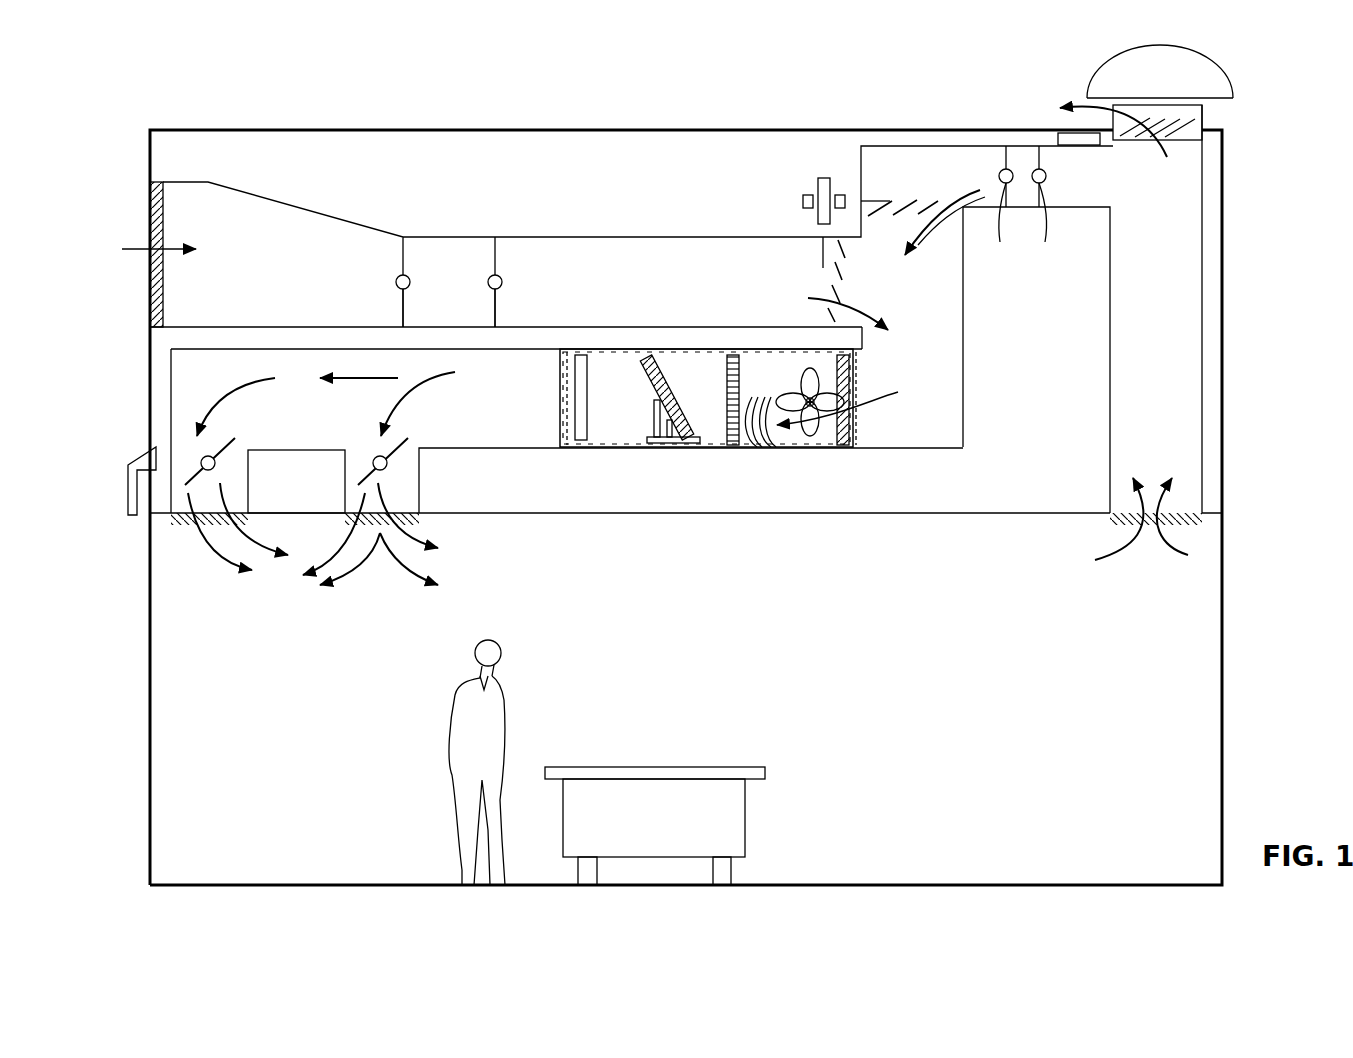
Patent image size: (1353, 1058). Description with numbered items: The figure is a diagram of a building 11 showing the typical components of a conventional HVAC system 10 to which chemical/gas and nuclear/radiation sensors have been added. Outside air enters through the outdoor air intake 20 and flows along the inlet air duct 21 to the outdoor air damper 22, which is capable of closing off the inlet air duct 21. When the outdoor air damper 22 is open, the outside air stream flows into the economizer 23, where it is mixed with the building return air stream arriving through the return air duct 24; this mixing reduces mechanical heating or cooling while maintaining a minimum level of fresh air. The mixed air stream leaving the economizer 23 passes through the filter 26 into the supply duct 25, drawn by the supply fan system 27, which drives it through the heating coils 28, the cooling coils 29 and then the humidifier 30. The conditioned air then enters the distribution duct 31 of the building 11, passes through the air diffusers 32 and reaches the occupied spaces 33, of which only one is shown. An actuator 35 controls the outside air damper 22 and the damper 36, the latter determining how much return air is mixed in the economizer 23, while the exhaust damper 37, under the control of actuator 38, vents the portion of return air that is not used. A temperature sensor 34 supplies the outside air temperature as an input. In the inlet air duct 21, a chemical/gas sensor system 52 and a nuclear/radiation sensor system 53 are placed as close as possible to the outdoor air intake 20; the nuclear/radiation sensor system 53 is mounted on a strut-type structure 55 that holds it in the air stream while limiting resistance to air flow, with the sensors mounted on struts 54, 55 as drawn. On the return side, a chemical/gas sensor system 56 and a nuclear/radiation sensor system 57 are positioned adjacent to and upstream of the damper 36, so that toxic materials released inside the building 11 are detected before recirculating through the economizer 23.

The HVAC system 10 is at (970, 588).
The building 11 is at (135, 684).
The outdoor air intake 20 is at (150, 222).
The inlet air duct 21 is at (283, 285).
The outdoor air damper 22 is at (833, 285).
The economizer 23 is at (963, 300).
The return air duct 24 is at (1176, 352).
The supply duct 25 is at (780, 352).
The filter 26 is at (850, 436).
The supply fan system 27 is at (830, 392).
The heating coils 28 is at (725, 408).
The cooling coils 29 is at (648, 376).
The humidifier 30 is at (573, 397).
The distribution duct 31 is at (494, 430).
The air diffusers 32 is at (222, 440).
The occupied spaces 33 is at (311, 720).
The temperature sensor 34 is at (128, 498).
The actuator 35 is at (803, 201).
The damper 36 is at (930, 204).
The exhaust damper 37 is at (1190, 120).
The actuator 38 is at (1060, 128).
The chemical/gas sensor system 52 is at (396, 282).
The nuclear/radiation sensor system 53 is at (503, 284).
The sensor lead 54 is at (404, 308).
The strut-type structure 55 is at (503, 322).
The chemical/gas sensor system 56 is at (999, 175).
The nuclear/radiation sensor system 57 is at (1047, 177).